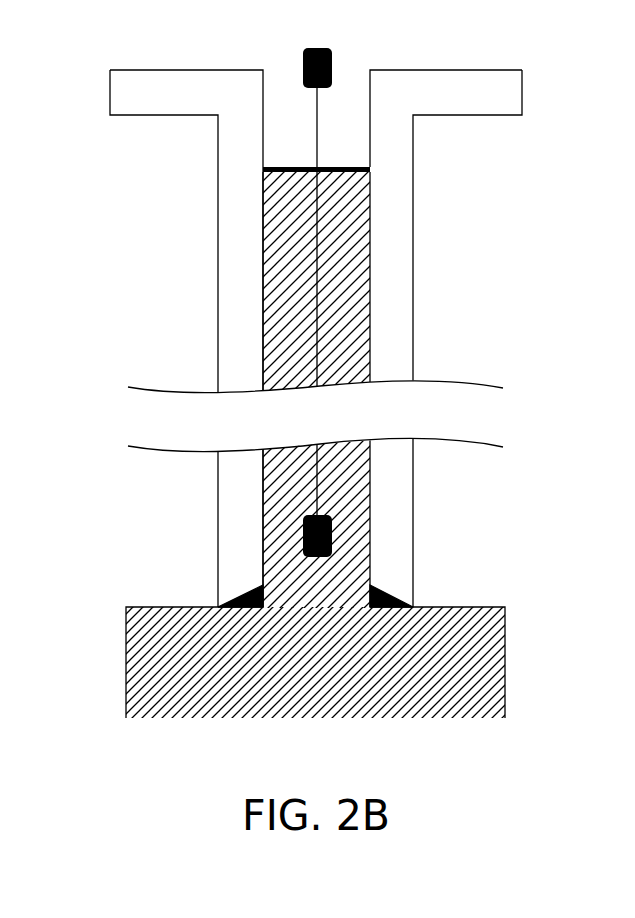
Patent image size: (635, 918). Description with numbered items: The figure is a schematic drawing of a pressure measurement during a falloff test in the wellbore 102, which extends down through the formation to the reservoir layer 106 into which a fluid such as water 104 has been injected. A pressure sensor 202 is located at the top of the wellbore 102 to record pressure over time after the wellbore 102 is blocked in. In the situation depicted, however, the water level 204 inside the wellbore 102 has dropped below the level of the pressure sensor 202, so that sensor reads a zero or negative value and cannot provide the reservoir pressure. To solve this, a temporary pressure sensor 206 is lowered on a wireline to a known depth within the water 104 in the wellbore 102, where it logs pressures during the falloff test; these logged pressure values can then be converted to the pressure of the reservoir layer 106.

The wellbore 102 is at (218, 303).
The water 104 is at (283, 238).
The reservoir layer 106 is at (533, 602).
The pressure sensor 202 is at (305, 52).
The water level 204 is at (350, 167).
The temporary pressure sensor 206 is at (303, 537).